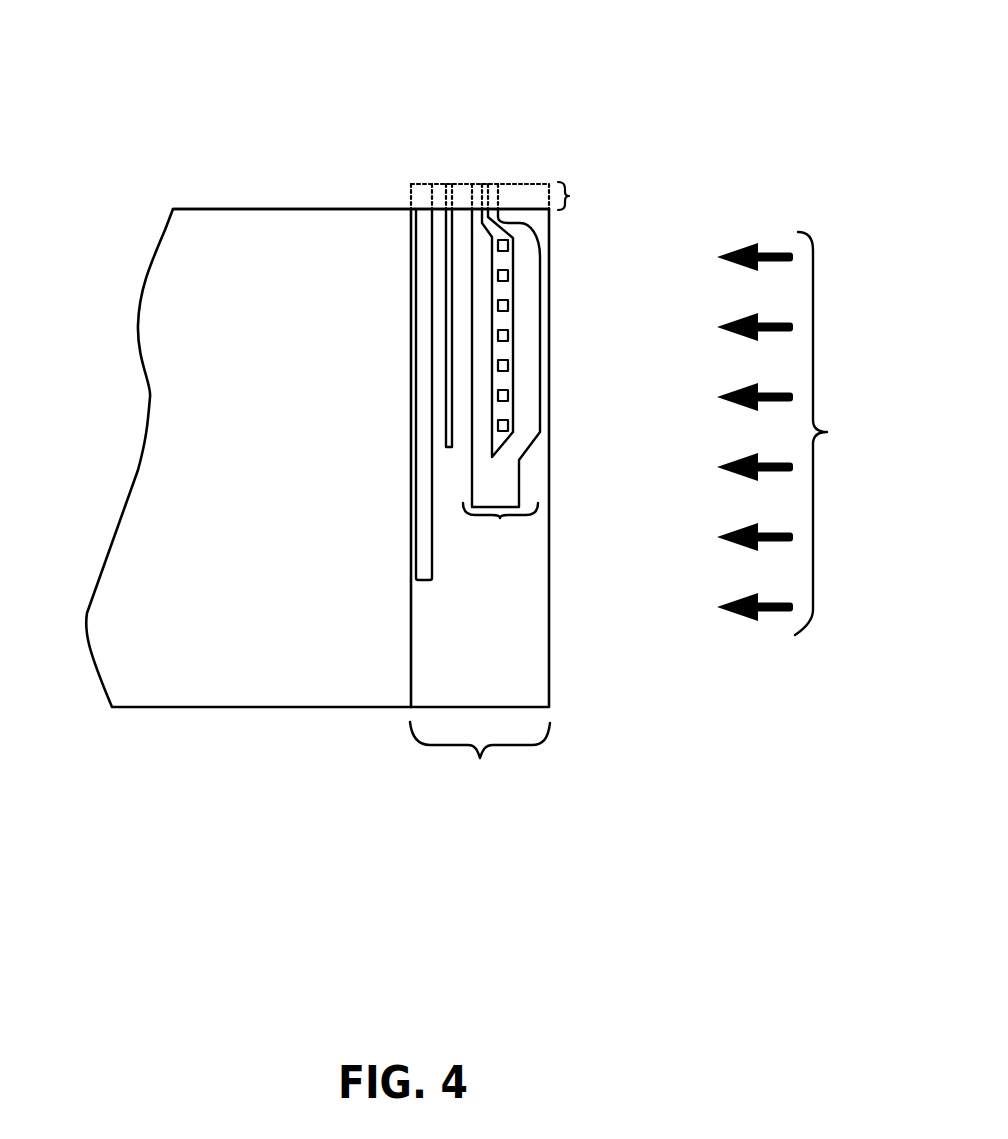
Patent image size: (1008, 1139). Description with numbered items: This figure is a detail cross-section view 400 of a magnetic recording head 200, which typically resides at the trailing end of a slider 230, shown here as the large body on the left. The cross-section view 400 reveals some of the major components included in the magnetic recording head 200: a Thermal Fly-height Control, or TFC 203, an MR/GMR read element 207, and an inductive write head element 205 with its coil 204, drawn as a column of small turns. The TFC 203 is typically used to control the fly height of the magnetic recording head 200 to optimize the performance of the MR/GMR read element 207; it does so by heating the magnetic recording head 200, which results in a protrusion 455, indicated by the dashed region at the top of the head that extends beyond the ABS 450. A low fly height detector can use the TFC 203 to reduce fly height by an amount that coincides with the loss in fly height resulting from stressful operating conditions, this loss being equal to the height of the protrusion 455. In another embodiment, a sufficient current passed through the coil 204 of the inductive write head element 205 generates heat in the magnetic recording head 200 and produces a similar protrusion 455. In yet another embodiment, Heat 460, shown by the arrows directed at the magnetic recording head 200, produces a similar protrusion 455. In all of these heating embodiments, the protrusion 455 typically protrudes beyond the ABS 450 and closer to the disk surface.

The detail cross-section view 400 is at (438, 68).
The ABS 450 is at (277, 208).
The protrusion 455 is at (572, 197).
The slider 230 is at (183, 478).
The magnetic recording head 200 is at (480, 758).
The Thermal Fly-height Control (TFC) 203 is at (432, 585).
The MR/GMR read element 207 is at (447, 453).
The coil 204 is at (505, 407).
The inductive write head element 205 is at (500, 518).
The Heat 460 is at (827, 432).